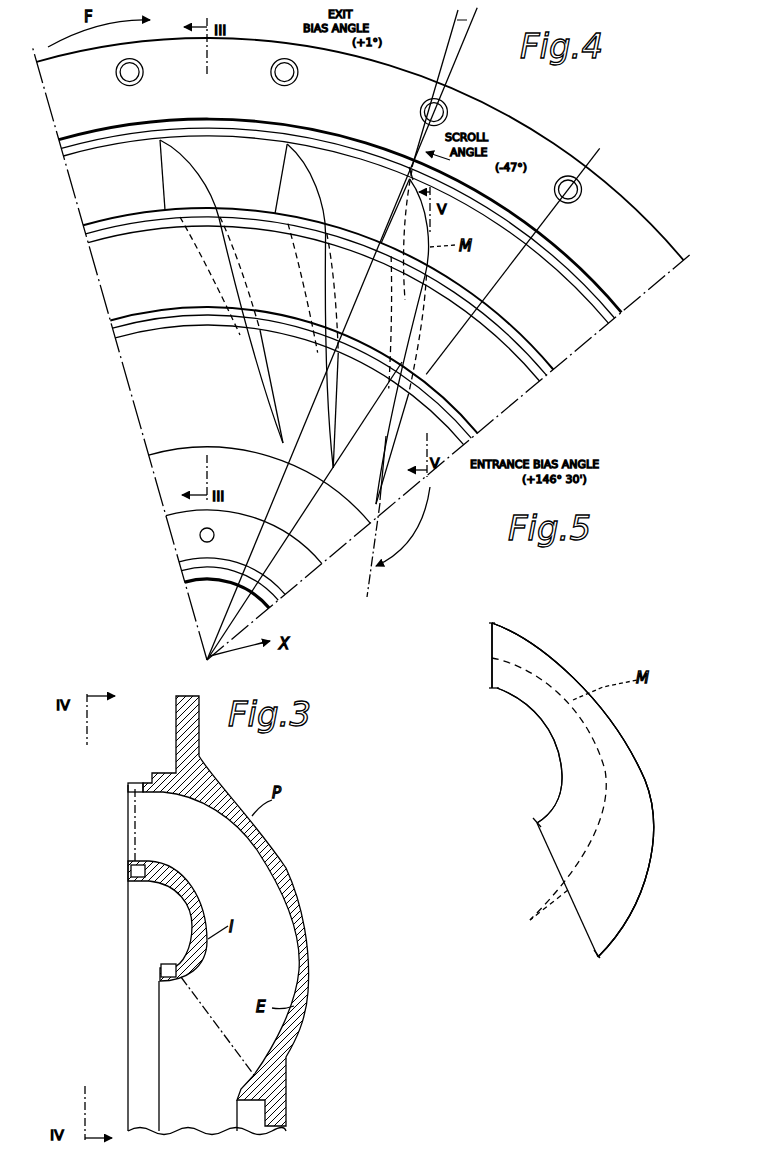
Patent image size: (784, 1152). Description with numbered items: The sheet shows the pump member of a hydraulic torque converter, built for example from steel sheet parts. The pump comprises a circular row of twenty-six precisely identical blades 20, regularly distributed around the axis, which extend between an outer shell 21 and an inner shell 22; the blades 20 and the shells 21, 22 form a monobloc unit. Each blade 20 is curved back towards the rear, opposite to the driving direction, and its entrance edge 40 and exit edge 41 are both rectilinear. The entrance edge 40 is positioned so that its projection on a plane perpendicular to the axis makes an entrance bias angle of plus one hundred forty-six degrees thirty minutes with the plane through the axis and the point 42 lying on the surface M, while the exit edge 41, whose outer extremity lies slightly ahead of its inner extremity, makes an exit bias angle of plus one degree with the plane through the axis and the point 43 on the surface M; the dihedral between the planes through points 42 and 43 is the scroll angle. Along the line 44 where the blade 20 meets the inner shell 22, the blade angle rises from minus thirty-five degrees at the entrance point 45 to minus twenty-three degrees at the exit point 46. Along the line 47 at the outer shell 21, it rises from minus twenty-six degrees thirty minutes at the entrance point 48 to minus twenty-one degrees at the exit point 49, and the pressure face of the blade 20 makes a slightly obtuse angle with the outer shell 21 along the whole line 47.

In FIG. 4, the blades 20 is at (260, 370).
In FIG. 5, the blades 20 is at (632, 751).
In FIG. 3, the outer shell 21 is at (305, 958).
In FIG. 3, the inner shell 22 is at (201, 912).
In FIG. 4, the entrance edge 40 is at (386, 462).
In FIG. 5, the entrance edge 40 is at (548, 861).
In FIG. 4, the exit edge 41 is at (410, 172).
In FIG. 5, the exit edge 41 is at (490, 637).
In FIG. 4, the point of entrance edge on surface M 42 is at (388, 434).
In FIG. 5, the point of entrance edge on surface M 42 is at (538, 908).
In FIG. 4, the point of exit edge on surface M 43 is at (395, 204).
In FIG. 5, the point of exit edge on surface M 43 is at (494, 658).
In FIG. 4, the line of blade in contact with inner shell 44 is at (208, 258).
In FIG. 5, the line of blade in contact with inner shell 44 is at (557, 750).
In FIG. 5, the entrance point 45 is at (537, 823).
In FIG. 5, the exit point 46 is at (492, 688).
In FIG. 4, the line of blade in contact with outer shell 47 is at (244, 268).
In FIG. 5, the line of blade in contact with outer shell 47 is at (651, 870).
In FIG. 5, the entrance point 48 is at (600, 956).
In FIG. 5, the exit point 49 is at (492, 623).